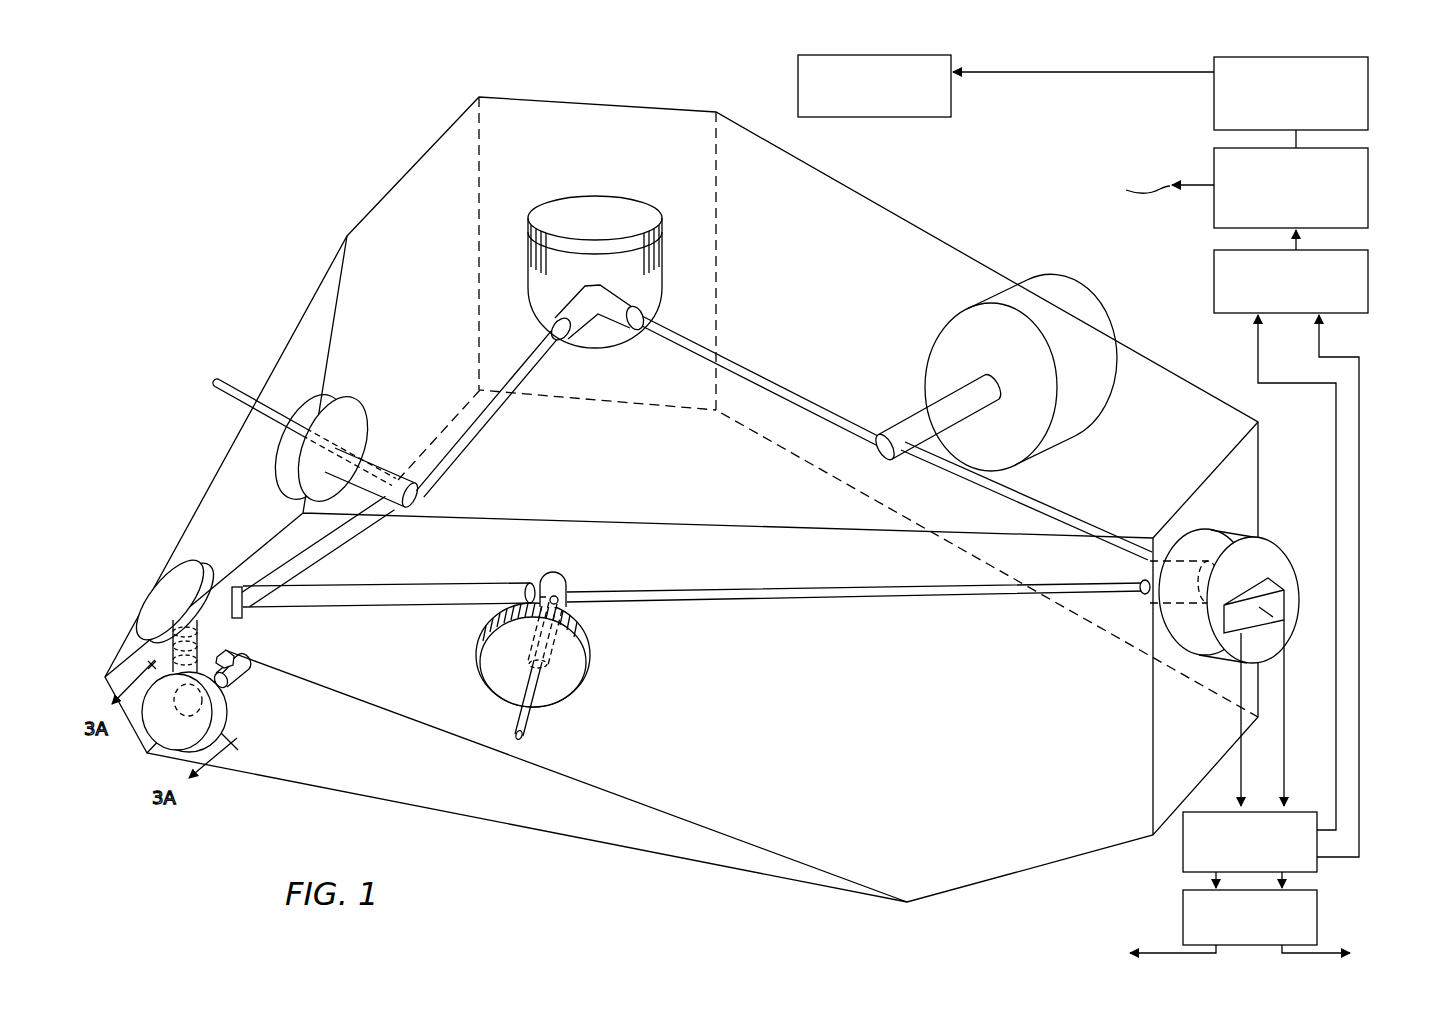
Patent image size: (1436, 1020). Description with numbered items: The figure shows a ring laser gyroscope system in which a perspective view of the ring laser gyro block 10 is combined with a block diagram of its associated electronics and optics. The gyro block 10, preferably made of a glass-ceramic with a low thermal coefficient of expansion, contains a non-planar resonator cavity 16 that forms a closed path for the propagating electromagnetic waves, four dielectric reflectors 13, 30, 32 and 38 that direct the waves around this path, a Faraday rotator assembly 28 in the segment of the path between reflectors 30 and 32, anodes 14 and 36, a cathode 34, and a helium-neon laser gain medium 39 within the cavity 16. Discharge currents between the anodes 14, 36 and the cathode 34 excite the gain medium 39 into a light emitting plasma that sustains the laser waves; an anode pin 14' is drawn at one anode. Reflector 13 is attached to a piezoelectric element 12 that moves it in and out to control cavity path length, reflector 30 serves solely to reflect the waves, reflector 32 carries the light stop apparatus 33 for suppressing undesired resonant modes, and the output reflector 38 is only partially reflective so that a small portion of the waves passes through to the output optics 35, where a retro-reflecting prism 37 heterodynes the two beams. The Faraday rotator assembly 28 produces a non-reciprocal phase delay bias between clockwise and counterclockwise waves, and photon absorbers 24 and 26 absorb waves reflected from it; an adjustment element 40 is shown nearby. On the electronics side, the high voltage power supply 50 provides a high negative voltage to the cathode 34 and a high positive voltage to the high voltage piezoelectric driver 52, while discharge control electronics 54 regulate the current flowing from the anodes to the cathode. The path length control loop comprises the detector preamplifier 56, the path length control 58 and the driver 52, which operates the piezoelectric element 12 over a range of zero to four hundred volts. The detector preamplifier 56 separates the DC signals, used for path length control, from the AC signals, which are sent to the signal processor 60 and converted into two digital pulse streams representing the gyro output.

The ring laser gyro block 10 is at (338, 170).
The piezoelectric element 12 is at (648, 224).
The reflector 13 is at (662, 269).
The anode 14 is at (672, 197).
The anode pin 14' is at (317, 445).
The non-planar resonator cavity 16 is at (478, 420).
The photon absorber 24 is at (238, 586).
The photon absorber 26 is at (248, 681).
The Faraday rotator assembly 28 is at (150, 650).
The reflector 30 is at (158, 585).
The reflector 32 is at (233, 722).
The light stop apparatus 33 is at (177, 694).
The cathode 34 is at (1079, 292).
The output optics 35 is at (1271, 526).
The anode 36 is at (568, 697).
The retro-reflecting prism 37 is at (1289, 557).
The output reflector 38 is at (1221, 527).
The laser gain medium 39 is at (795, 391).
The adjustment nut 40 is at (233, 656).
The high voltage power supply 50 is at (1214, 63).
The high voltage piezoelectric driver 52 is at (1214, 212).
The discharge control electronics 54 is at (935, 117).
The detector preamplifier 56 is at (1183, 848).
The path length control 58 is at (1214, 294).
The signal processor 60 is at (1183, 912).